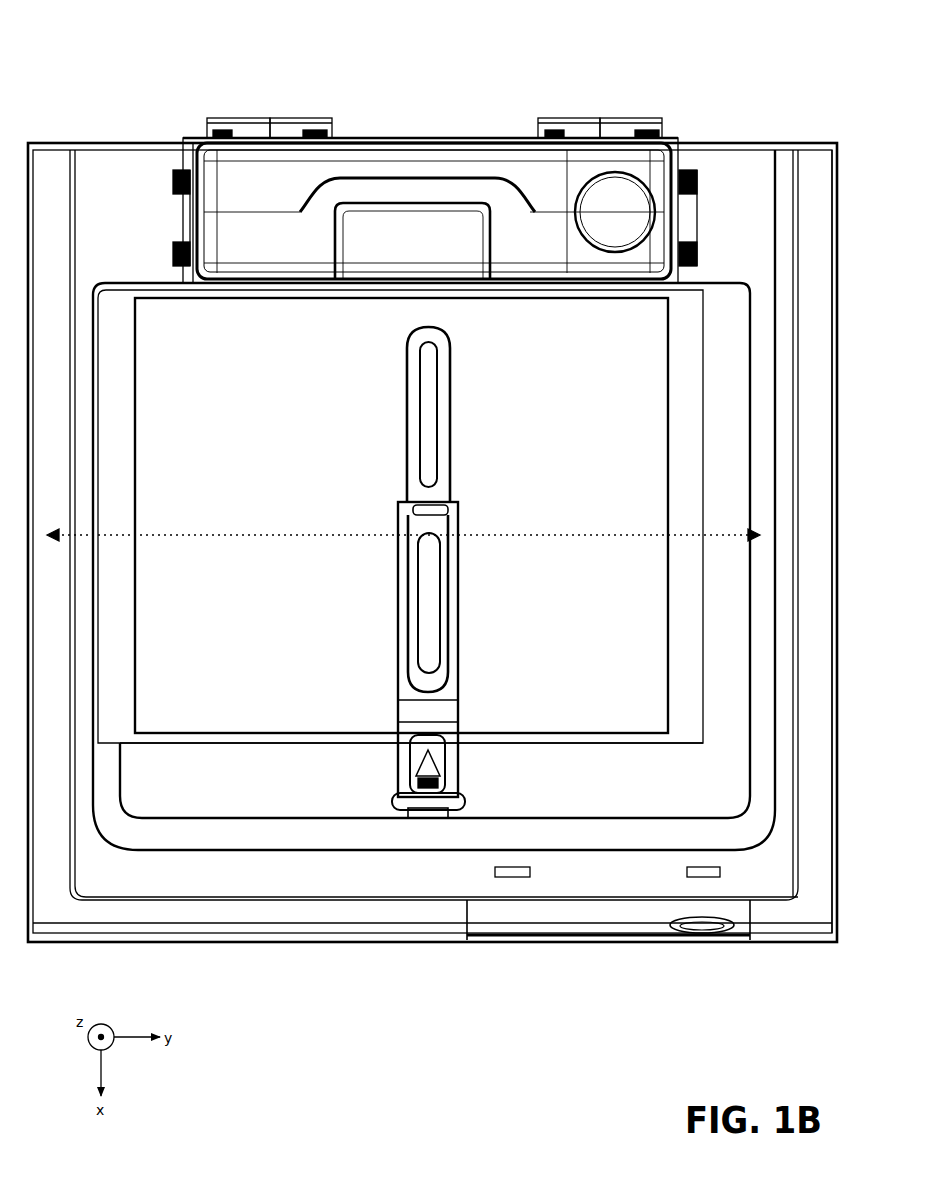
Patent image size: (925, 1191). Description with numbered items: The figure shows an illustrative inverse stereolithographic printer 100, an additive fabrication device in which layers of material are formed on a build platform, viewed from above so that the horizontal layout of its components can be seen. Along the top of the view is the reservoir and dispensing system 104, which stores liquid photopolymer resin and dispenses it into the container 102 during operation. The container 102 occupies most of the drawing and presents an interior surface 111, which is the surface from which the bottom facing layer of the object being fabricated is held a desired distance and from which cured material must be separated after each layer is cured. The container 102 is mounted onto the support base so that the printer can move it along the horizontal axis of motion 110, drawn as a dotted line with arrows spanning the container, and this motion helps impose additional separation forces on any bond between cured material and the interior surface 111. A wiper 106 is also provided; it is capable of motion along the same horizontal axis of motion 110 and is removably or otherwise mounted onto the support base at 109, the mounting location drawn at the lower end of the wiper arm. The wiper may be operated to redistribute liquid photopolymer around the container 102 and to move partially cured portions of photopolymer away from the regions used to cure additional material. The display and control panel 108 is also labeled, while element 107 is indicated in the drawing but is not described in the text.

The stereolithographic printer 100 is at (103, 37).
The container 102 is at (710, 293).
The reservoir and dispensing system 104 is at (462, 193).
The wiper 106 is at (604, 908).
The panel 107 is at (254, 745).
The display and control panel 108 is at (444, 493).
The wiper mounting location 109 is at (420, 822).
The horizontal axis of motion 110 is at (239, 540).
The interior surface 111 is at (401, 515).